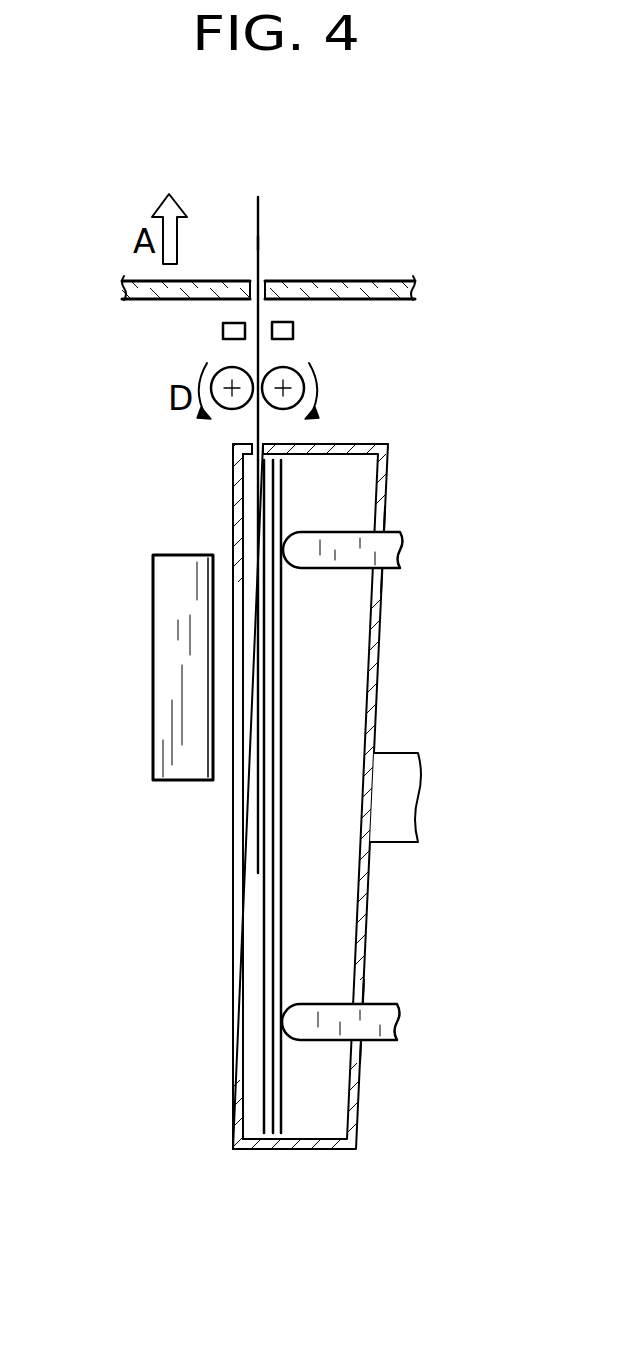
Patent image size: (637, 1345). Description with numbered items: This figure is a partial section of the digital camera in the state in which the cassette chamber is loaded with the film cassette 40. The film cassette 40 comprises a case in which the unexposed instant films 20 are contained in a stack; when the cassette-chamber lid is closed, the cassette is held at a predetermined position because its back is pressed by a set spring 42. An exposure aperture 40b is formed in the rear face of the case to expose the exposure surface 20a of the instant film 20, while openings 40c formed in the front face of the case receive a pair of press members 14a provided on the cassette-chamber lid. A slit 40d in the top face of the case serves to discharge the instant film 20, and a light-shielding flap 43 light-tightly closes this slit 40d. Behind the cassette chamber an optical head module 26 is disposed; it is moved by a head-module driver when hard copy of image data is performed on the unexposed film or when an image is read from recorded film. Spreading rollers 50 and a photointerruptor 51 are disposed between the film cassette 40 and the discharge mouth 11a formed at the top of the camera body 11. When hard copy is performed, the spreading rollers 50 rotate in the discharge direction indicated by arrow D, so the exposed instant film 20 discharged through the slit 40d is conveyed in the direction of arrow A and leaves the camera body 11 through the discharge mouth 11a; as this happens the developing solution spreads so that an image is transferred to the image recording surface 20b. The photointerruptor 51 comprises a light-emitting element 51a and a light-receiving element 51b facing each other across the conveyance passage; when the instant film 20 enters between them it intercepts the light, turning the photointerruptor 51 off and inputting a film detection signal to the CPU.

The camera body 11 is at (398, 280).
The discharge mouth 11a is at (248, 280).
The press members 14a is at (340, 568).
The instant film 20 is at (279, 193).
The exposure surface 20a is at (257, 827).
The image recording surface 20b is at (259, 243).
The optical head module 26 is at (152, 650).
The film cassette 40 is at (302, 848).
The exposure aperture 40b is at (240, 927).
The openings 40c is at (382, 518).
The slit 40d is at (250, 437).
The set spring 42 is at (398, 753).
The light-shielding flap 43 is at (268, 437).
The spreading rollers 50 is at (222, 367).
The photointerruptor 51 is at (291, 335).
The light-emitting element 51a is at (295, 330).
The light-receiving element 51b is at (222, 331).